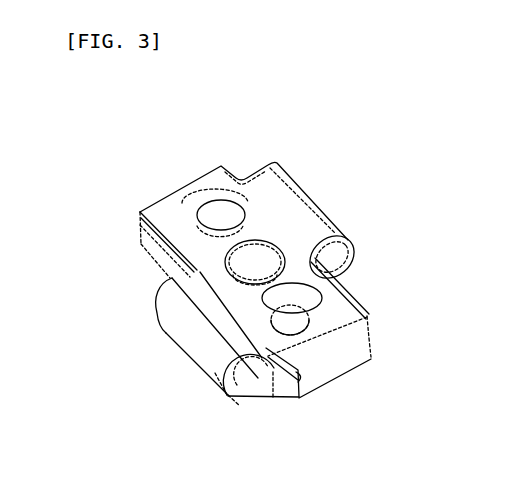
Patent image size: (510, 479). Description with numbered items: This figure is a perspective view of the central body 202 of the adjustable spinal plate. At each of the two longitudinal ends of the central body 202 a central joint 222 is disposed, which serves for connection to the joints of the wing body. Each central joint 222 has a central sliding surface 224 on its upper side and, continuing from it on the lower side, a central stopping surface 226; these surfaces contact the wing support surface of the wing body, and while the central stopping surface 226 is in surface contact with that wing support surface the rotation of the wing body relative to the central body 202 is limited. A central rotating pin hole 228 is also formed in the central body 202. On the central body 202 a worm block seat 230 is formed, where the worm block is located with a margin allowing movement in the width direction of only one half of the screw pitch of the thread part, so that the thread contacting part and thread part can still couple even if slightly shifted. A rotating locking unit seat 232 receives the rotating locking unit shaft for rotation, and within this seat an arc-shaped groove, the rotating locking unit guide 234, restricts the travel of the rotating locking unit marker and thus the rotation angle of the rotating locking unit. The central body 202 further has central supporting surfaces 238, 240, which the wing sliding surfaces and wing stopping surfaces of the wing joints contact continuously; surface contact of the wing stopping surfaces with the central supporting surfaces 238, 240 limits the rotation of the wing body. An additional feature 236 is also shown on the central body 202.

The central body 202 is at (232, 128).
The central joint 222 is at (248, 384).
The central sliding surface 224 is at (172, 308).
The central stopping surface 226 is at (225, 390).
The central rotating pin hole 228 is at (226, 404).
The worm block seat 230 is at (298, 376).
The rotating locking unit seat 232 is at (323, 297).
The rotating locking unit guide 234 is at (318, 318).
The central through hole 236 is at (263, 249).
The central supporting surface 238 is at (155, 248).
The central supporting surface 240 is at (295, 400).